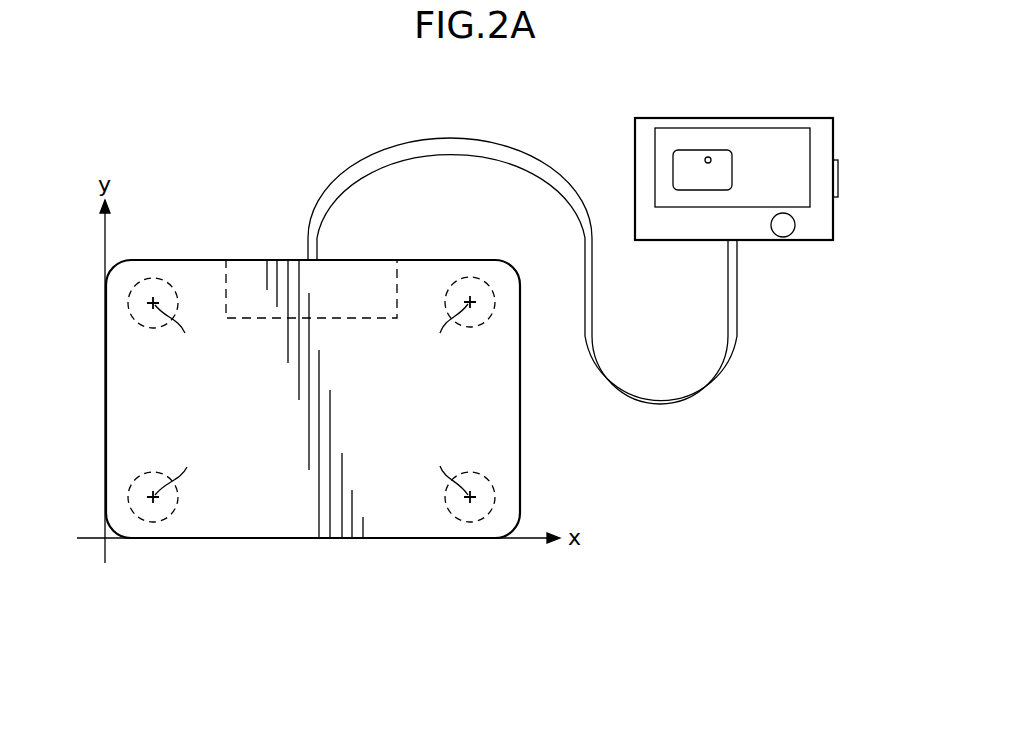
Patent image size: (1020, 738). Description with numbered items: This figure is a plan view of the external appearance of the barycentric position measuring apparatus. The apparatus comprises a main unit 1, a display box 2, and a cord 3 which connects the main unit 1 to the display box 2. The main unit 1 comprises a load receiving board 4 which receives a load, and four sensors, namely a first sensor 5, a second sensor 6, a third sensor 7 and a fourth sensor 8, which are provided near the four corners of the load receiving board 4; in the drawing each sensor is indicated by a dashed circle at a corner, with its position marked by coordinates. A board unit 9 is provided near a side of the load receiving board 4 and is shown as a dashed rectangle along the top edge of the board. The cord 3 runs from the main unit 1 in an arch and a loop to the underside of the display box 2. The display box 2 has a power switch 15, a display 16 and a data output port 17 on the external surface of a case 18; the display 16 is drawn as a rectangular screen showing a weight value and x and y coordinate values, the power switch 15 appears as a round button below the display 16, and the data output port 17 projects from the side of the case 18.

The main unit 1 is at (204, 208).
The display box 2 is at (771, 95).
The cord 3 is at (676, 413).
The load receiving board 4 is at (305, 540).
The first sensor 5 is at (128, 302).
The second sensor 6 is at (495, 302).
The third sensor 7 is at (495, 497).
The fourth sensor 8 is at (128, 497).
The board unit 9 is at (374, 264).
The power switch 15 is at (783, 238).
The display 16 is at (676, 134).
The data output port 17 is at (839, 178).
The case 18 is at (635, 145).